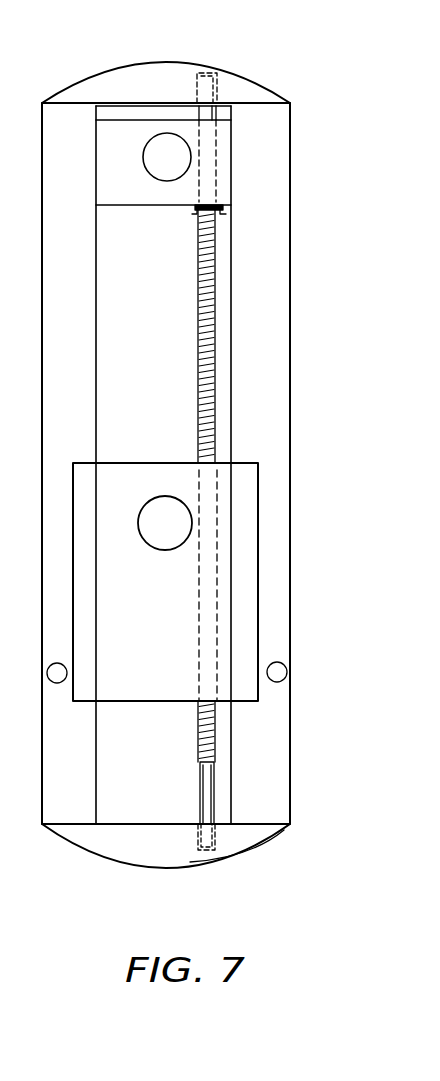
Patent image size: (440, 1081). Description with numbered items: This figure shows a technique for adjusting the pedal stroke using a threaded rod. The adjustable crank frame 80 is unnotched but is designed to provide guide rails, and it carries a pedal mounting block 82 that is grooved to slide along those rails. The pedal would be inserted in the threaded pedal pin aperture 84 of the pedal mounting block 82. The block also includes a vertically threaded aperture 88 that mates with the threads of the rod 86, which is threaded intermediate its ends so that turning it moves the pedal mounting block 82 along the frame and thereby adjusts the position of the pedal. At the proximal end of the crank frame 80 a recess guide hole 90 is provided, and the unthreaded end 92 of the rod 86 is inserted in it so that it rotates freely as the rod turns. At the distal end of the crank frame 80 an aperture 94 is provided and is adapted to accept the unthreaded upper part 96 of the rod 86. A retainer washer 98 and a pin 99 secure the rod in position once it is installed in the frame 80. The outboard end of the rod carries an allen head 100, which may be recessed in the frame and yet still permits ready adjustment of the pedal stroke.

The adjustable crank frame 80 is at (292, 356).
The pedal mounting block 82 is at (87, 625).
The threaded pedal pin aperture 84 is at (191, 520).
The rod 86 is at (217, 400).
The vertically threaded aperture 88 is at (220, 460).
The recess guide hole 90 is at (278, 837).
The unthreaded end 92 is at (197, 833).
The aperture 94 is at (218, 88).
The unthreaded upper part 96 is at (200, 95).
The retainer washer 98 is at (224, 213).
The pin 99 is at (195, 212).
The allen head 100 is at (207, 68).